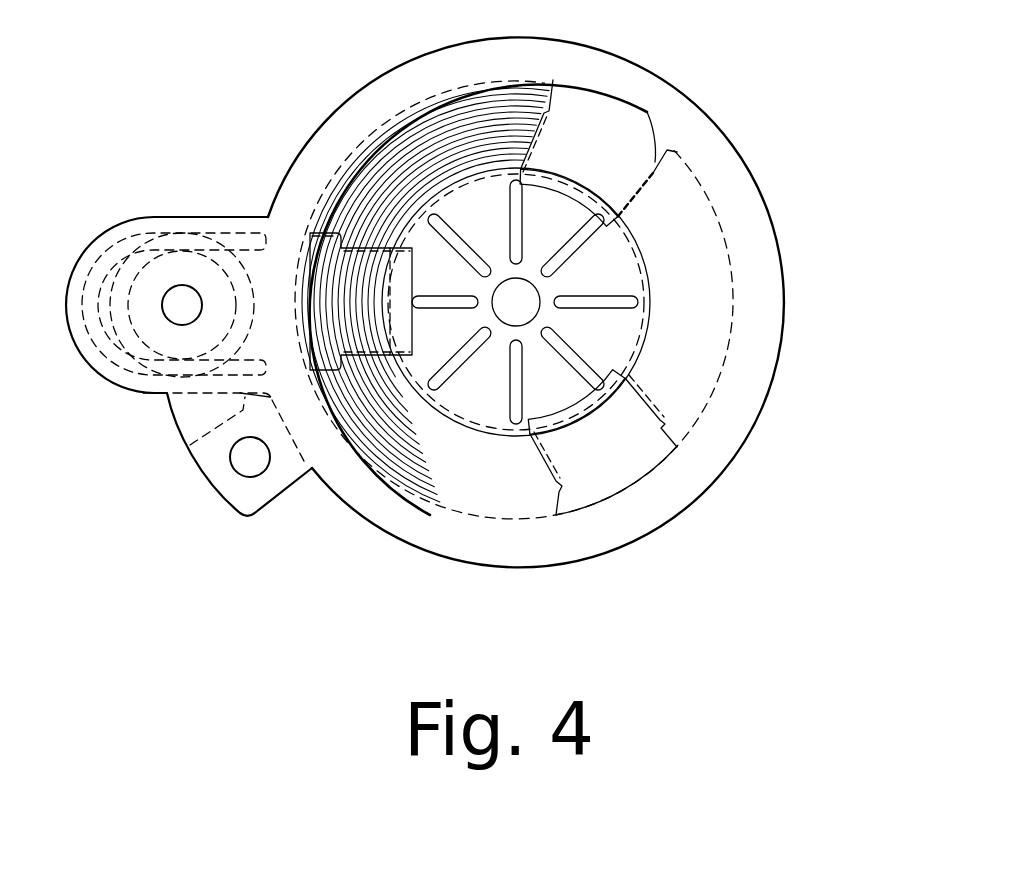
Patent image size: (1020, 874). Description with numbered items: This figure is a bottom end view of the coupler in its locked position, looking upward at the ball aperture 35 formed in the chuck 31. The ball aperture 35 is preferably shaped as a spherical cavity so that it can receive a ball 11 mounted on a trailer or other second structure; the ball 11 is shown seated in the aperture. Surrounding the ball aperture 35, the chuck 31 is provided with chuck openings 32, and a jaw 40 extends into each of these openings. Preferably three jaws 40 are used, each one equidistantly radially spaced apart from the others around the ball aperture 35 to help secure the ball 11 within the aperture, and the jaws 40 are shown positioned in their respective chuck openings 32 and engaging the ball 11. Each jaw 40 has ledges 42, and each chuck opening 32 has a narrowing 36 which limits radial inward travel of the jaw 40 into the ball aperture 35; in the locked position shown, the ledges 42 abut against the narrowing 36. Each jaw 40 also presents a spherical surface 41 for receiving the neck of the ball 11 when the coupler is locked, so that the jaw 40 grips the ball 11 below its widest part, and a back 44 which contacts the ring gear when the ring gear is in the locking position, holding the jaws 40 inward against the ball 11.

The ball 11 is at (625, 250).
The chuck 31 is at (750, 398).
The chuck opening 32 is at (641, 522).
The ball aperture 35 is at (476, 387).
The narrowing 36 is at (660, 170).
The jaw 40 is at (308, 235).
The spherical surface 41 is at (557, 205).
The ledge 42 is at (660, 168).
The back 44 is at (643, 114).